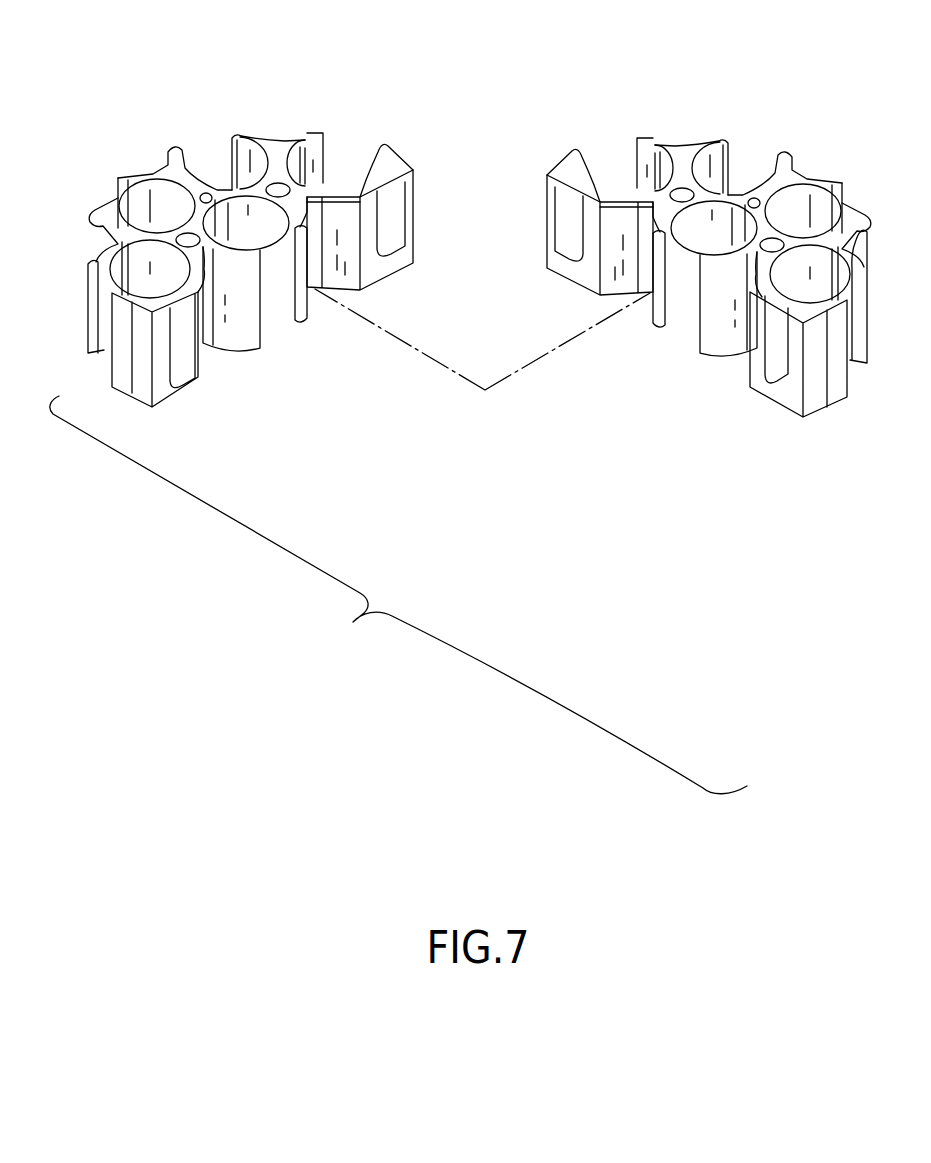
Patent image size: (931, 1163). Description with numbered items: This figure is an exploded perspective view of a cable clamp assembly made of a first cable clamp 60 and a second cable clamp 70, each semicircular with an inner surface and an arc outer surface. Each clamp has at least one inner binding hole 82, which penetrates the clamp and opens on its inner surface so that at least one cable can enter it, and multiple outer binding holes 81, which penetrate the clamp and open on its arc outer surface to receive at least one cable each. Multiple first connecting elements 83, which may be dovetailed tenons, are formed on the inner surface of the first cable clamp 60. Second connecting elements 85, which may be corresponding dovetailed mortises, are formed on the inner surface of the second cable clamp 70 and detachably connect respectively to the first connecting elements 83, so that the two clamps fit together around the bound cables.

The first cable clamp 60 is at (253, 68).
The second cable clamp 70 is at (748, 90).
The outer binding hole 81 is at (216, 157).
The inner binding hole 82 is at (255, 228).
The first connecting element 83 is at (393, 253).
The second connecting element 85 is at (570, 247).